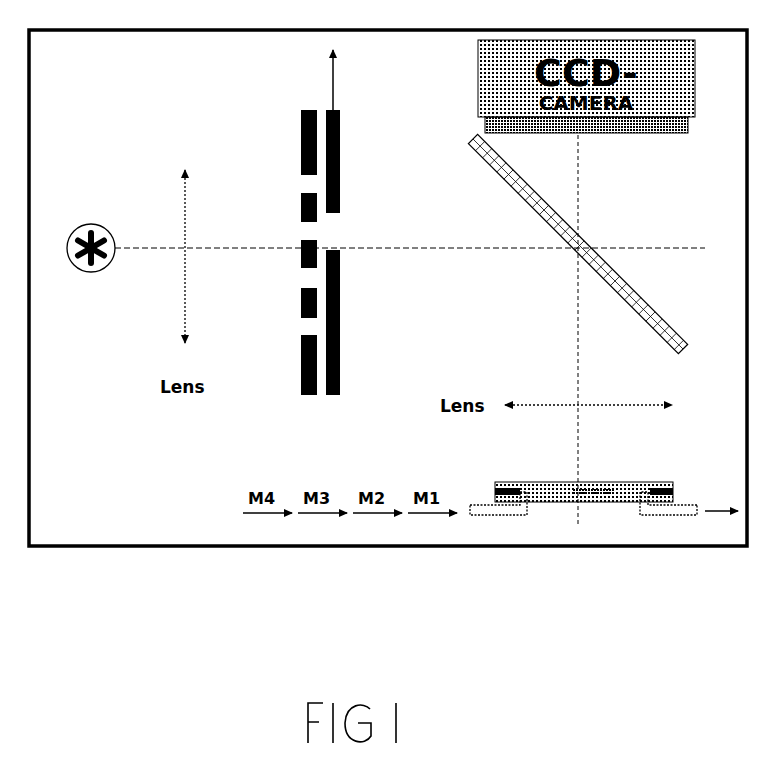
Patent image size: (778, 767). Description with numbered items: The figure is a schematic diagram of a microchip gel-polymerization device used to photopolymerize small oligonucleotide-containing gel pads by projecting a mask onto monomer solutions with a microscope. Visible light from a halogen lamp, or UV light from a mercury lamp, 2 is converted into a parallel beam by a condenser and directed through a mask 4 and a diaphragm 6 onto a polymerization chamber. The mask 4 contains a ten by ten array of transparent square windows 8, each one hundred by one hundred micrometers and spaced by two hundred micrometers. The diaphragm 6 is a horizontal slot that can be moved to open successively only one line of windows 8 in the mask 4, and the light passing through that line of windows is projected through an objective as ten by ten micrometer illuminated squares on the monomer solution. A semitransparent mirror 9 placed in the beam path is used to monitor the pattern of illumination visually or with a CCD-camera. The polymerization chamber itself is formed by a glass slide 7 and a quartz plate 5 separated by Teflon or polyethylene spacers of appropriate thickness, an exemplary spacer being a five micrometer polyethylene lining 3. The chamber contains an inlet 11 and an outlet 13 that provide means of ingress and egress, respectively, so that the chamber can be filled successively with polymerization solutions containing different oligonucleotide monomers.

The light 2 is at (93, 272).
The mask 4 is at (308, 397).
The diaphragm 6 is at (342, 382).
The square windows 8 is at (303, 330).
The semitransparent mirror 9 is at (655, 318).
The glass slide 7 is at (608, 483).
The polyethylene lining 3 is at (673, 490).
The quartz plate 5 is at (612, 500).
The inlet 11 is at (504, 515).
The outlet 13 is at (678, 515).